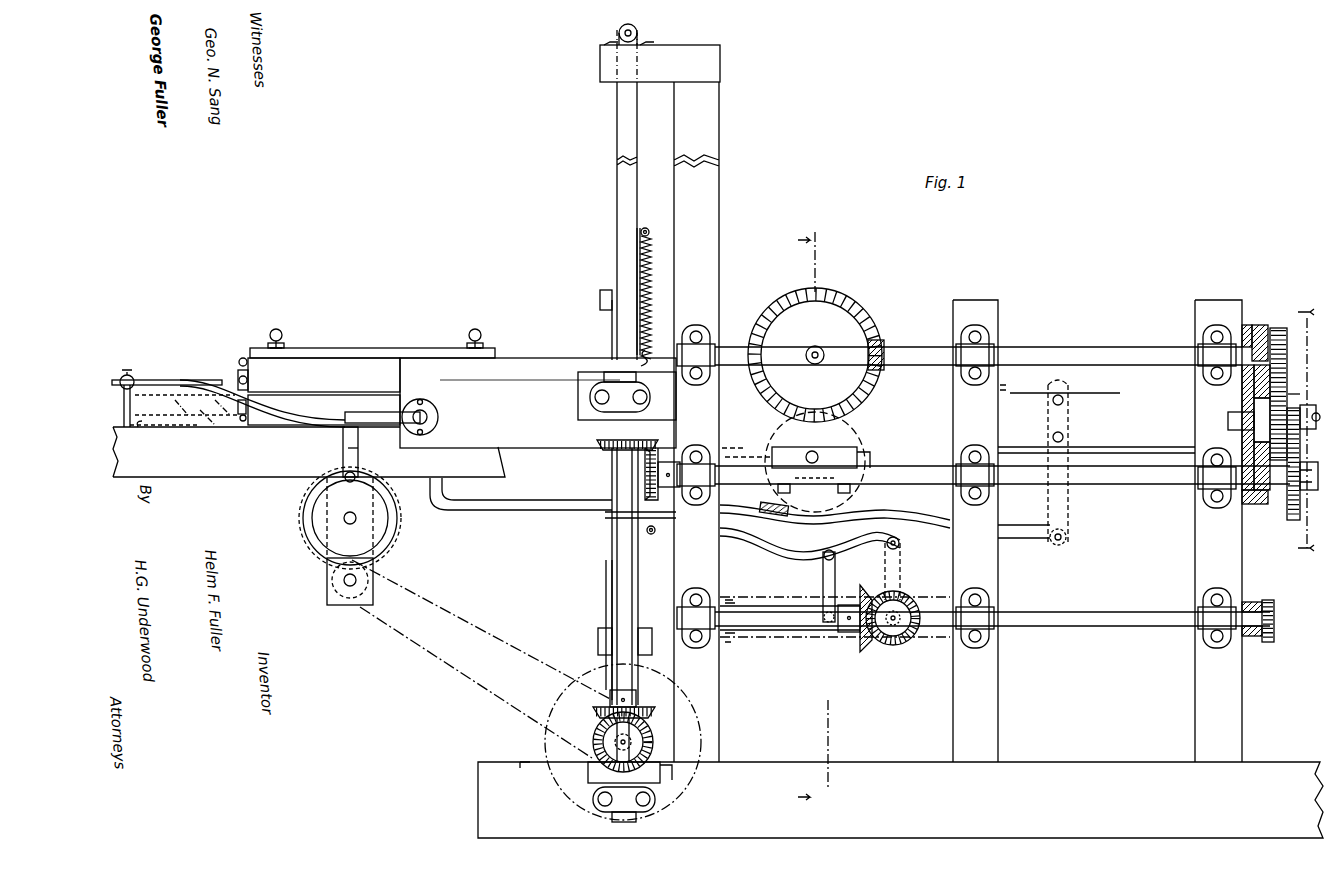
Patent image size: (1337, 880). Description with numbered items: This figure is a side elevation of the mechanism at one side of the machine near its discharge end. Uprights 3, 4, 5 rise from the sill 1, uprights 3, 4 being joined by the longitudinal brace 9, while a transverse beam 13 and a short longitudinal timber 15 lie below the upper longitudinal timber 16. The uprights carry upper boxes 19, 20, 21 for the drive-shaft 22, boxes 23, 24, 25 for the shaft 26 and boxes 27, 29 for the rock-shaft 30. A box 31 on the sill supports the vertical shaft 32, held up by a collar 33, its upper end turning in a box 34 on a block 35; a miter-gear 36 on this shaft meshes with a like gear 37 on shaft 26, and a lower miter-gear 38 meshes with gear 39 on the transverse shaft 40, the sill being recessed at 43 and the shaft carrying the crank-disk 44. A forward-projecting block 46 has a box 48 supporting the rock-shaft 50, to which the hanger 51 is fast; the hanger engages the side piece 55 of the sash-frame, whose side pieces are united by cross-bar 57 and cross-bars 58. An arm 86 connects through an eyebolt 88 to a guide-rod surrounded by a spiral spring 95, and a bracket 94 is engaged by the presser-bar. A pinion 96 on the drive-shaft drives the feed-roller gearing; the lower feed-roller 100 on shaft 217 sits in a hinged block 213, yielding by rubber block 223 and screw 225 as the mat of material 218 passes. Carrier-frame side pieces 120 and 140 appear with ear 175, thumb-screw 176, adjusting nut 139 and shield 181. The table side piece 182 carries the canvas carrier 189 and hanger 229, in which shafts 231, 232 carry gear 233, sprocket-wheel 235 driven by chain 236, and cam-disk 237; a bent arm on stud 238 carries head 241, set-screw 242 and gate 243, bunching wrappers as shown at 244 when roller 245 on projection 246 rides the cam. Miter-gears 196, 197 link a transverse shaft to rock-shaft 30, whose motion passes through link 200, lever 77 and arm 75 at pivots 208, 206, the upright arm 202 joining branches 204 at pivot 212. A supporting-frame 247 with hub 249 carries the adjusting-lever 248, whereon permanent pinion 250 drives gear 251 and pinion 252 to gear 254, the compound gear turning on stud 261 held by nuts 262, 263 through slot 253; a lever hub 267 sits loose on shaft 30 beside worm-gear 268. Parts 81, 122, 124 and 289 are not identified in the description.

The sill 1 is at (900, 800).
The upright 3 is at (717, 712).
The upright 4 is at (980, 690).
The upright 5 is at (1218, 531).
The longitudinal brace 9 is at (735, 598).
The transverse beam 13 is at (1308, 428).
The short longitudinal timber 15 is at (813, 520).
The upper longitudinal timber 16 is at (1118, 394).
The upper box 19 is at (696, 355).
The upper box 20 is at (975, 355).
The upper box 21 is at (1217, 355).
The drive-shaft 22 is at (978, 355).
The box 23 is at (696, 475).
The box 24 is at (975, 475).
The box 25 is at (1210, 469).
The shaft 26 is at (1002, 475).
The box 27 is at (694, 590).
The box 29 is at (1205, 608).
The rock-shaft 30 is at (1116, 613).
The box 31 is at (624, 804).
The vertical shaft 32 is at (620, 582).
The collar 33 is at (600, 777).
The box 34 is at (600, 423).
The block 35 is at (578, 402).
The miter-gear 36 is at (598, 452).
The miter-gear 37 is at (645, 491).
The miter-gear 38 is at (647, 714).
The miter-gear 39 is at (658, 747).
The transverse shaft 40 is at (656, 345).
The recess 43 is at (660, 777).
The crank-disk 44 is at (623, 742).
The forward-projecting block 46 is at (660, 62).
The box 48 is at (628, 56).
The eye 50 is at (638, 32).
The hanger 51 is at (617, 216).
The side piece 55 is at (612, 327).
The cross-bar 57 is at (600, 296).
The cross-bar 58 is at (598, 634).
The arm 75 is at (1068, 509).
The bent lever 77 is at (1026, 538).
The pin 81 is at (654, 534).
The arm 86 is at (636, 252).
The eyebolt 88 is at (646, 228).
The bracket 94 is at (793, 308).
The spiral spring 95 is at (652, 283).
The pinion 96 is at (866, 369).
The lower feed-roller 100 is at (840, 500).
The side piece 120 is at (330, 372).
The bar 122 is at (318, 390).
The roller 124 is at (240, 376).
The adjusting screw and nut 139 is at (238, 404).
The side piece 140 is at (362, 348).
The lateral ear 175 is at (286, 338).
The thumb-screw 176 is at (276, 329).
The sheet-metal shield 181 is at (242, 357).
The side piece 182 is at (309, 452).
The canvas endless carrier 189 is at (142, 427).
The miter-gear 196 is at (897, 648).
The miter-gear 197 is at (864, 646).
The link 200 is at (824, 571).
The upright arm 202 is at (893, 577).
The branch 204 is at (485, 514).
The pivot 206 is at (1066, 539).
The pivot 208 is at (817, 560).
The pivot 212 is at (897, 546).
The hinged block 213 is at (848, 458).
The transverse shaft 217 is at (806, 457).
The mat of material 218 is at (746, 443).
The rubber block 223 is at (800, 482).
The screw 225 is at (778, 489).
The hanger 229 is at (328, 606).
The transverse shaft 231 is at (350, 515).
The transverse shaft 232 is at (362, 586).
The gear 233 is at (304, 548).
The sprocket-wheel 235 is at (332, 583).
The sprocket-chain 236 is at (476, 634).
The cam-disk 237 is at (350, 518).
The stud 238 is at (430, 418).
The head 241 is at (135, 378).
The set-screw 242 is at (127, 370).
The gate 243 is at (132, 414).
The bunched articles 244 is at (195, 405).
The roller 245 is at (342, 471).
The downward projection 246 is at (356, 460).
The supporting-frame 247 is at (1250, 504).
The adjusting-lever 248 is at (1252, 325).
The upper hub 249 is at (1264, 326).
The permanent pinion 250 is at (1287, 340).
The gear 251 is at (1299, 395).
The pinion 252 is at (1314, 492).
The slot 253 is at (1242, 402).
The gear 254 is at (1292, 522).
The stud 261 is at (1269, 427).
The nut 262 is at (1228, 422).
The nut 263 is at (835, 524).
The hub 267 is at (1252, 604).
The worm-gear 268 is at (1266, 642).
The pipe 289 is at (262, 406).